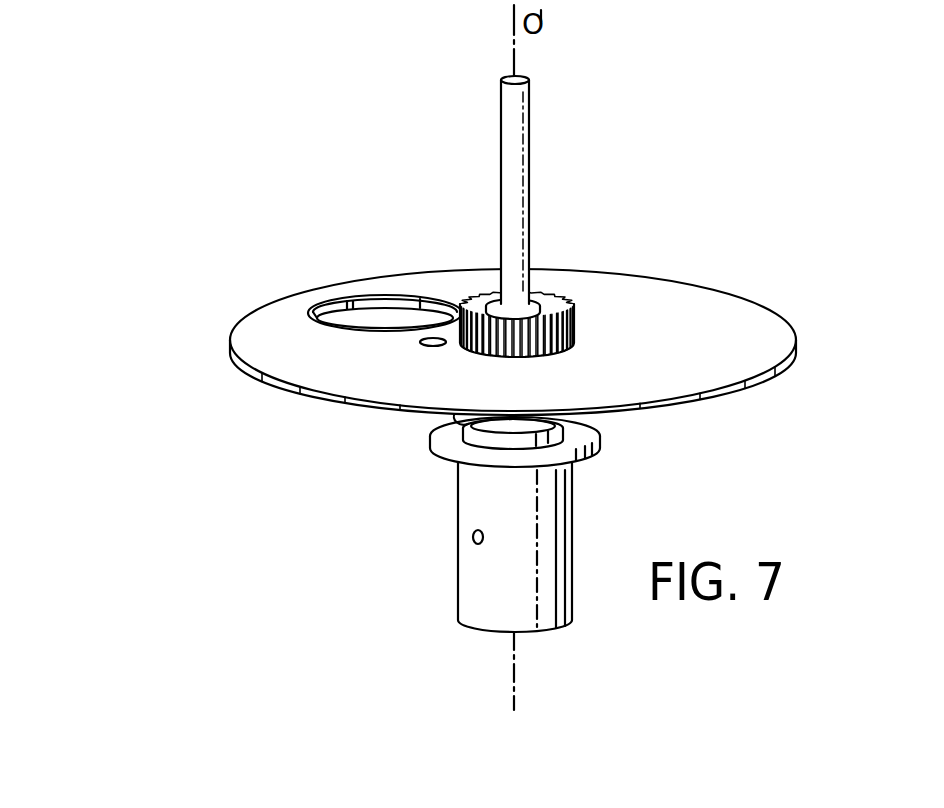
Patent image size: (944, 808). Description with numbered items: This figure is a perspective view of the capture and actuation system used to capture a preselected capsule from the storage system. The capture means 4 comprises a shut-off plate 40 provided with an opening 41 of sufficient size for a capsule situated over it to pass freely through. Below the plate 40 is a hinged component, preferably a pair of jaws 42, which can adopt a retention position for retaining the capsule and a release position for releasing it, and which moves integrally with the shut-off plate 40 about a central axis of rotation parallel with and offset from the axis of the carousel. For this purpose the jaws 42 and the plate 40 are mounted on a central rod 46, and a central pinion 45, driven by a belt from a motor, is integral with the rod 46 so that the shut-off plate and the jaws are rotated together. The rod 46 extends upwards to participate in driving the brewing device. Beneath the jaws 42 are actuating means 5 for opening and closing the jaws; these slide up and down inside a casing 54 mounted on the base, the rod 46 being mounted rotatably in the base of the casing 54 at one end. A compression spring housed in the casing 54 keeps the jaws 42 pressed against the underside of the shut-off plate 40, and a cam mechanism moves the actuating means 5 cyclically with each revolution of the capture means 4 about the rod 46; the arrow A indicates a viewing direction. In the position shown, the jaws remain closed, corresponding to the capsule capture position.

The capture means 4 is at (514, 327).
The shut-off plate 40 is at (727, 317).
The opening 41 is at (413, 297).
The pair of jaws 42 is at (332, 322).
The central pinion 45 is at (570, 303).
The central rod 46 is at (518, 165).
The actuating means 5 is at (454, 561).
The casing 54 is at (458, 620).
The viewing direction A is at (207, 403).